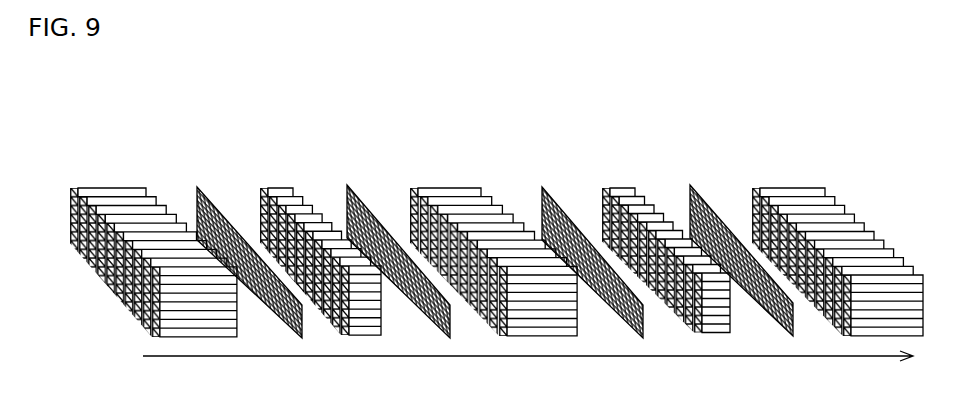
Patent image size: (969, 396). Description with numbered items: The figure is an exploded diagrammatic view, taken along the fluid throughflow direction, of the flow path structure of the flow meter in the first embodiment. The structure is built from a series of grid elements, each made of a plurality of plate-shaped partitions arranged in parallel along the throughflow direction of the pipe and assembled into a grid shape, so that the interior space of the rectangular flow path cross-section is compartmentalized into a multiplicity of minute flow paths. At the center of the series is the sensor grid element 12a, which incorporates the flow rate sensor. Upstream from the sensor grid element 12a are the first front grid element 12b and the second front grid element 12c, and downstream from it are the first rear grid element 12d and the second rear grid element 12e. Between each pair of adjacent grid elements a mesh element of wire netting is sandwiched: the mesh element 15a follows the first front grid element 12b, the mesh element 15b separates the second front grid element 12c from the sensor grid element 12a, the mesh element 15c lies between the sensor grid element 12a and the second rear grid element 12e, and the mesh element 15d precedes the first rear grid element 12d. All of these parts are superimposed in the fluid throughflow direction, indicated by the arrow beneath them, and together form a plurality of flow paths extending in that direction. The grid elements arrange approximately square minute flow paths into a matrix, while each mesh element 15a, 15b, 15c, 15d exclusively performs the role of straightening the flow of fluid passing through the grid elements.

The sensor grid element 12a is at (453, 190).
The first front grid element 12b is at (117, 192).
The second front grid element 12c is at (282, 192).
The first rear grid element 12d is at (791, 190).
The second rear grid element 12e is at (620, 190).
The mesh element 15a is at (205, 188).
The mesh element 15b is at (355, 186).
The mesh element 15c is at (543, 188).
The mesh element 15d is at (697, 186).